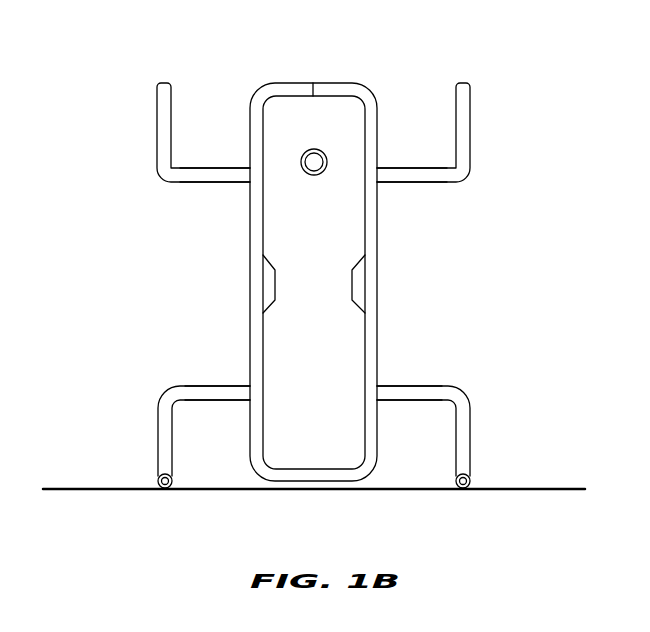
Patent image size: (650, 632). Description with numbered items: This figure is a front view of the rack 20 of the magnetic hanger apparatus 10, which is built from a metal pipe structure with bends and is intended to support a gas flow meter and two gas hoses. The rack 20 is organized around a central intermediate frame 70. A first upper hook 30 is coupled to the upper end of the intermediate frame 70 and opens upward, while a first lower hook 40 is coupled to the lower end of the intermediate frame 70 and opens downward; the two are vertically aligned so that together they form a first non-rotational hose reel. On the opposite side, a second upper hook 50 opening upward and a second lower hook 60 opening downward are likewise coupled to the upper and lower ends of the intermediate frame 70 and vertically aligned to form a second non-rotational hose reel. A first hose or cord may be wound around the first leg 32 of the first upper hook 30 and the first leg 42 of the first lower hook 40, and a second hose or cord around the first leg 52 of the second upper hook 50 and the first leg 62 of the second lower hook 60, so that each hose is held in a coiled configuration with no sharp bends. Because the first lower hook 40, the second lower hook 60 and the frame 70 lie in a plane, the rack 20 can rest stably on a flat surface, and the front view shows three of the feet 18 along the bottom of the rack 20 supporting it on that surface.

The apparatus 10 is at (416, 64).
The feet 18 is at (315, 176).
The rack 20 is at (88, 202).
The first upper hook 30 is at (157, 85).
The first leg of first upper hook 32 is at (218, 167).
The first lower hook 40 is at (157, 446).
The first leg of first lower hook 42 is at (207, 386).
The second upper hook 50 is at (470, 84).
The first leg of second upper hook 52 is at (412, 167).
The second lower hook 60 is at (472, 446).
The first leg of second lower hook 62 is at (420, 386).
The intermediate frame 70 is at (248, 224).